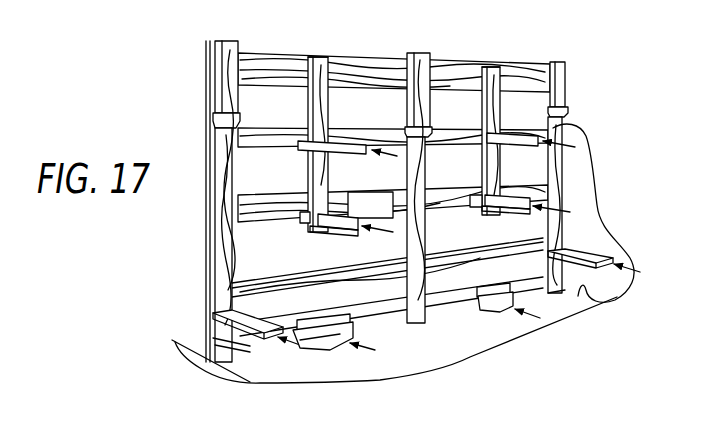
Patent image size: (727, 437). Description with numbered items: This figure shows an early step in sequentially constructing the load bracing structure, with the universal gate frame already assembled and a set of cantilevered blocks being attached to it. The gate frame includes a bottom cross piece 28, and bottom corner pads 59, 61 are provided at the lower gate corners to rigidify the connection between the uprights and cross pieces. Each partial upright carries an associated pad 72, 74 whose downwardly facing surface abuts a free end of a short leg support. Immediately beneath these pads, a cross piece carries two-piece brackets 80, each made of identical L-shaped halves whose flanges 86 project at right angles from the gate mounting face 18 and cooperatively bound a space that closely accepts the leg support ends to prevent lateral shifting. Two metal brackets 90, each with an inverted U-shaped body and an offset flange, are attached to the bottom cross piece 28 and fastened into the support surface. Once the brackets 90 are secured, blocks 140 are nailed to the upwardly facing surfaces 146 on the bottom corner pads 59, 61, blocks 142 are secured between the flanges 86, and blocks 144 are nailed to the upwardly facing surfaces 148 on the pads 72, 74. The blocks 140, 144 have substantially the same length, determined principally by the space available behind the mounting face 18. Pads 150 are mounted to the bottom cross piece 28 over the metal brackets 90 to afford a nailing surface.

The mounting face 18 is at (280, 23).
The bottom cross piece 28 is at (398, 322).
The bottom corner pad 59 is at (210, 345).
The bottom corner pad 61 is at (557, 292).
The pad 72 is at (328, 168).
The pad 74 is at (488, 160).
The two-piece bracket 80 is at (304, 210).
The flange 86 is at (318, 232).
The metal bracket 90 is at (340, 318).
The block 140 is at (245, 342).
The block 142 is at (340, 194).
The block 144 is at (338, 142).
The upwardly facing surface 146 is at (212, 316).
The upwardly facing surface 148 is at (322, 140).
The pad 150 is at (335, 350).